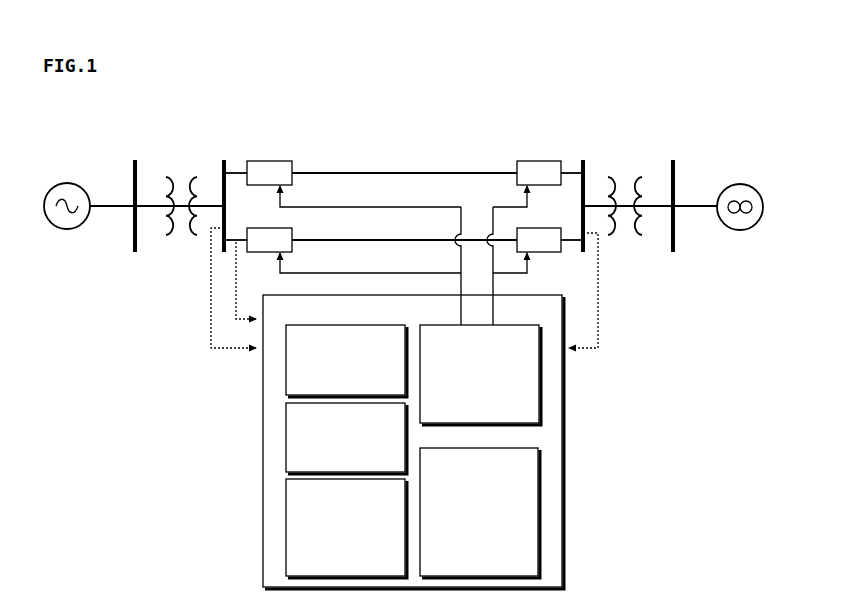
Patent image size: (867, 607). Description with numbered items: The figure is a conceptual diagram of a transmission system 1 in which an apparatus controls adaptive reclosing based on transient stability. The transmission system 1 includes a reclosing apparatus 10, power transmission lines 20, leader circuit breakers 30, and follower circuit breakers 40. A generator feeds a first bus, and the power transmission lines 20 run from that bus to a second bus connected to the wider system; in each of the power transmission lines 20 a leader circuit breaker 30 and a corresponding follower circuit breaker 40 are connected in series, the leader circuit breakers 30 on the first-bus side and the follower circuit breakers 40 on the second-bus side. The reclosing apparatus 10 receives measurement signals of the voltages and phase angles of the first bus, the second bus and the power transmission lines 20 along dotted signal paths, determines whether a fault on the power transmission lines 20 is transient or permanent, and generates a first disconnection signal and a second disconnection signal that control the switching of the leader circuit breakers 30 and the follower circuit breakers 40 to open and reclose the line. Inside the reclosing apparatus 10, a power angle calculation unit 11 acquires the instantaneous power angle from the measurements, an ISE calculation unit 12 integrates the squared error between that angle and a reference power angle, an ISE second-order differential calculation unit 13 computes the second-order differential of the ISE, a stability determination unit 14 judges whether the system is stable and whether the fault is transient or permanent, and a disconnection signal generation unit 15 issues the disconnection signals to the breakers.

The transmission system 1 is at (467, 127).
The reclosing apparatus 10 is at (404, 318).
The power angle calculation unit 11 is at (371, 386).
The ISE calculation unit 12 is at (371, 462).
The ISE second-order differential calculation unit 13 is at (371, 554).
The stability determination unit 14 is at (470, 548).
The disconnection signal generation unit 15 is at (505, 408).
The power transmission lines 20 is at (332, 172).
The leader circuit breakers 30 is at (261, 182).
The follower circuit breakers 40 is at (531, 182).